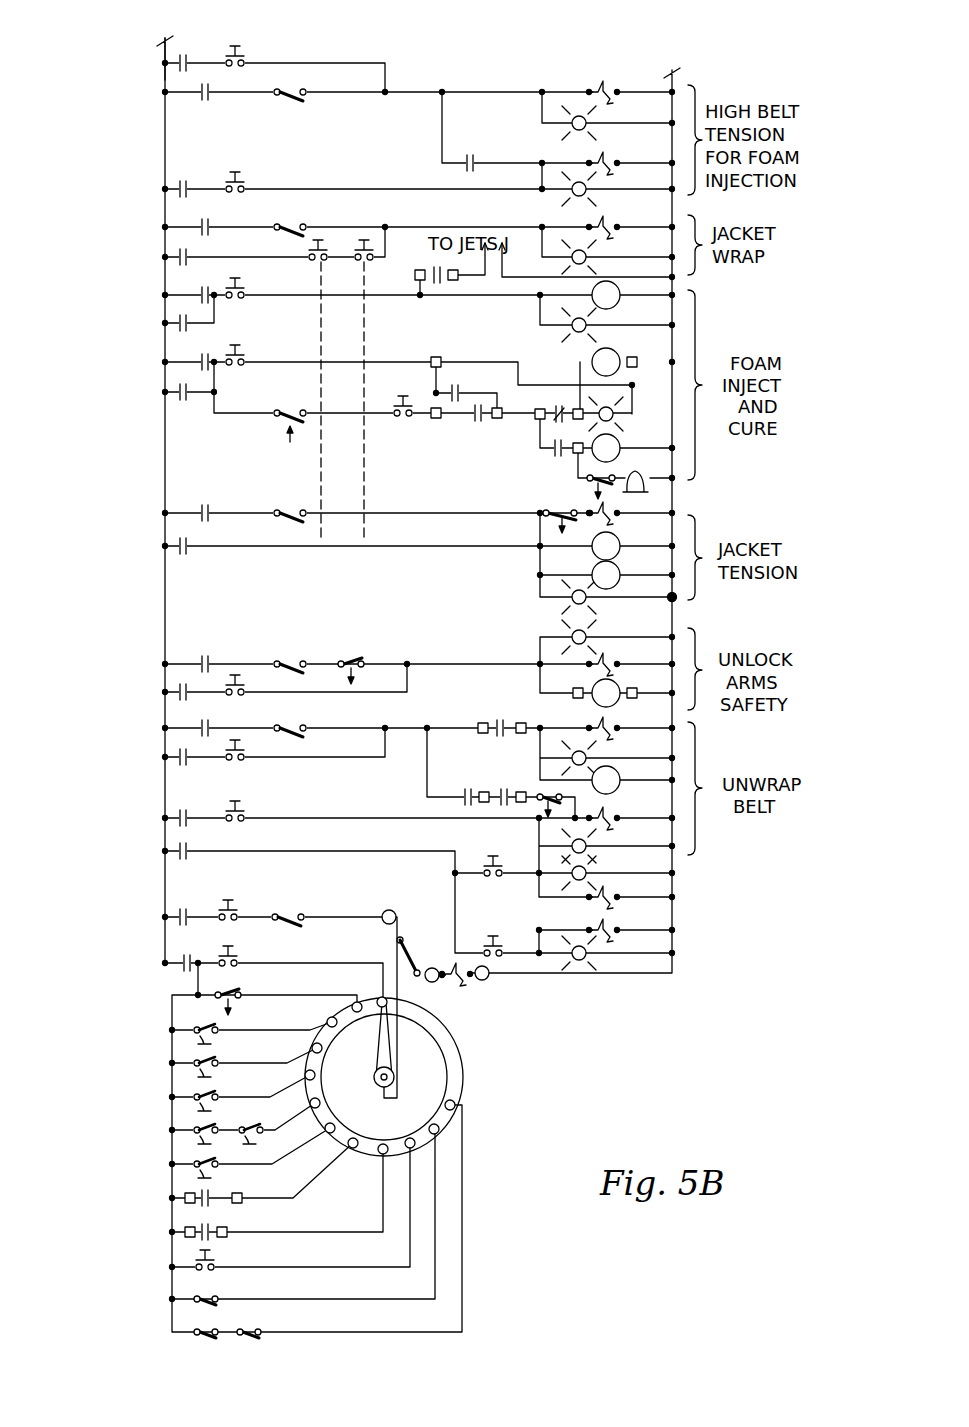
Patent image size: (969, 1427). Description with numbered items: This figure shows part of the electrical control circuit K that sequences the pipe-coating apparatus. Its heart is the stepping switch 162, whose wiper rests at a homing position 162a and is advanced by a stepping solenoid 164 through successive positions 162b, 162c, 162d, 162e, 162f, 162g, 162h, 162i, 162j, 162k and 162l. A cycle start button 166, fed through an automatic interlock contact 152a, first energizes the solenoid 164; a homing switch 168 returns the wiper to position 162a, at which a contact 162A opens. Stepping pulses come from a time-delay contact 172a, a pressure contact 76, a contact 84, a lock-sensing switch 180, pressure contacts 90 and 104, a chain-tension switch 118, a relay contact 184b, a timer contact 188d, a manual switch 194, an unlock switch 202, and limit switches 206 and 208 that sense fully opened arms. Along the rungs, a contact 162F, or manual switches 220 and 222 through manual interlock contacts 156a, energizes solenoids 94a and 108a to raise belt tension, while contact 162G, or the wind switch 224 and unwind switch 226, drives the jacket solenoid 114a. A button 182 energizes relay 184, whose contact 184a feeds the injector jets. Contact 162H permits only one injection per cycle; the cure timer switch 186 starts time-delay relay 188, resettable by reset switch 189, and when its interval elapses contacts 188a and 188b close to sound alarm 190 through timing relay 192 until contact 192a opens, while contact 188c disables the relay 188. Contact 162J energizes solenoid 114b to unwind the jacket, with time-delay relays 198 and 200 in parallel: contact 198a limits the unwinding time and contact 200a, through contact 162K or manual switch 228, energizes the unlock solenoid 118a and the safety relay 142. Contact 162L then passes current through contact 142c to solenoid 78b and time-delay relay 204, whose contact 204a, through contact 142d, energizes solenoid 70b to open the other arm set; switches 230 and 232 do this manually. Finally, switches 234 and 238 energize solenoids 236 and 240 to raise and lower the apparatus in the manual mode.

The electrical control circuit K is at (94, 104).
The manual interlock control contact 156a is at (187, 52).
The automatic interlock control contact 152a is at (204, 108).
The manual switch 220 is at (247, 58).
The contact of stepping switch 162F is at (283, 102).
The solenoid 94a is at (604, 85).
The solenoid 108a is at (594, 162).
The solenoid 114a is at (594, 226).
The manual switch 222 is at (247, 183).
The contact of stepping switch 162G is at (292, 225).
The unwind switch 226 is at (365, 245).
The wind switch 224 is at (307, 252).
The contact of relay 184 184a is at (437, 288).
The button 182 is at (246, 290).
The relay 184 is at (613, 307).
The cure timer switch 186 is at (248, 361).
The time delay relay 188 is at (594, 357).
The contact 188c is at (560, 408).
The contact of stepping switch 162H is at (300, 406).
The reset switch 189 is at (399, 427).
The contact 188a is at (479, 430).
The contact 188b is at (558, 460).
The controlling time delay relay 192 is at (620, 441).
The contact 192a is at (588, 488).
The alarm 190 is at (650, 508).
The contact of stepping switch 162J is at (284, 507).
The contact 198a is at (548, 521).
The solenoid 114b is at (600, 519).
The time delay relay 198 is at (594, 556).
The time delay relay 200 is at (617, 584).
The contact of stepping switch 162K is at (292, 656).
The contact 200a is at (352, 654).
The manual switch 228 is at (246, 690).
The solenoid 118a is at (596, 664).
The safety control relay 142 is at (621, 680).
The contact of stepping switch 162L is at (293, 728).
The contact of relay 142 142c is at (483, 723).
The solenoid 78b is at (592, 726).
The opening switch 230 is at (236, 763).
The contact of relay 142 142d is at (484, 790).
The contact of relay 204 204a is at (545, 790).
The time delay relay 204 is at (617, 792).
The opening switch 232 is at (247, 815).
The solenoid 70b is at (604, 824).
The switch 234 is at (470, 858).
The switch 238 is at (490, 938).
The solenoid 236 is at (604, 904).
The solenoid 240 is at (604, 937).
The homing switch 168 is at (230, 898).
The contact of stepping switch 162A is at (290, 912).
The stepping solenoid 164 is at (462, 982).
The homing position 162a is at (385, 1000).
The cycle start button 166 is at (238, 958).
The contact of time delay relay 172a is at (236, 992).
The stepping switch 162 is at (488, 1075).
The second position 162b is at (378, 999).
The third position 162c is at (328, 1019).
The stepping switch contact 162d is at (313, 1048).
The position 162e is at (306, 1075).
The position 162f is at (311, 1104).
The position 162g is at (328, 1134).
The position 162h is at (355, 1149).
The position 162i is at (388, 1153).
The position 162j is at (415, 1147).
The position 162k is at (439, 1131).
The position 162l is at (456, 1105).
The contact 76 is at (153, 1034).
The contact 84 is at (153, 1067).
The sensing switch 180 is at (200, 1111).
The contact 90 is at (202, 1143).
The contact 104 is at (248, 1142).
The switch 118 is at (202, 1176).
The contact of relay 184 184b is at (194, 1206).
The contact 188d is at (226, 1240).
The switch 194 is at (215, 1273).
The switch 202 is at (215, 1308).
The limit switch 206 is at (202, 1343).
The limit switch 208 is at (258, 1344).